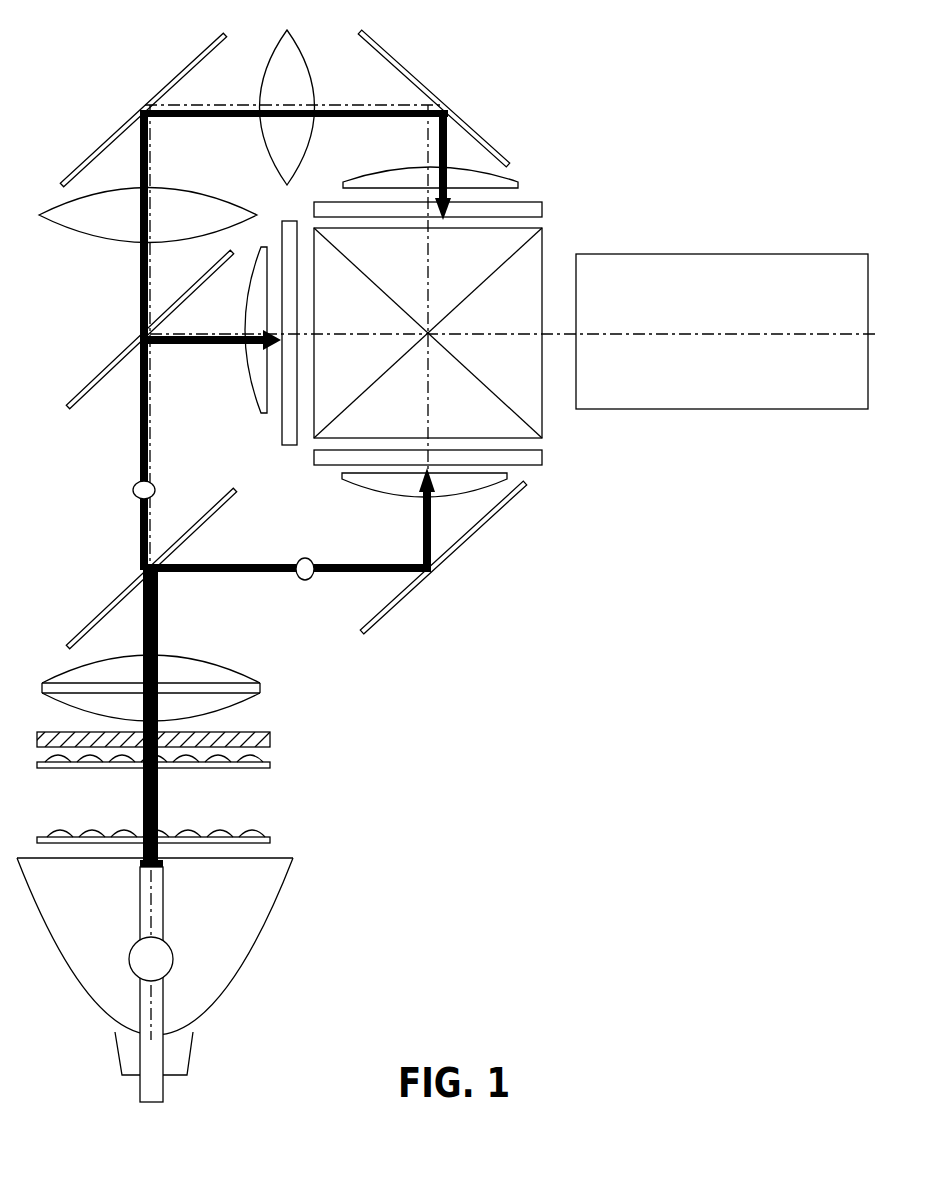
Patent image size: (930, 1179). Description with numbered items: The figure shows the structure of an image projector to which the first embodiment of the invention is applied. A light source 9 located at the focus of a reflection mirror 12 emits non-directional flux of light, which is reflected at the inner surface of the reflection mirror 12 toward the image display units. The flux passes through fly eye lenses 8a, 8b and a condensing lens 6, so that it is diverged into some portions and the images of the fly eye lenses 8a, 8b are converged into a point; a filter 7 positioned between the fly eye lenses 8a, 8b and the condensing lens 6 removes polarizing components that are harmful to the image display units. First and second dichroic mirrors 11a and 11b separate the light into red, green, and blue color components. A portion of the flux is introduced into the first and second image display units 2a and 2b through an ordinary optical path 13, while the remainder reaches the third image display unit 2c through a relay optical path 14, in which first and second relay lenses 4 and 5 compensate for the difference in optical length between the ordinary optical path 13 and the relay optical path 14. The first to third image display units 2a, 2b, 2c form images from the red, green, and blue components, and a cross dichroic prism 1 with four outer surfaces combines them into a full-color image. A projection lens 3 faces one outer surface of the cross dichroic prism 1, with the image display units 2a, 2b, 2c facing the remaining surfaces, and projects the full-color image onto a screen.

The cross dichroic prism 1 is at (533, 408).
The first image display unit 2a is at (543, 465).
The second image display unit 2b is at (287, 424).
The third image display unit 2c is at (543, 208).
The projection lens 3 is at (700, 254).
The first relay lens 4 is at (93, 227).
The second relay lens 5 is at (292, 44).
The condensing lens 6 is at (262, 687).
The filter 7 is at (271, 740).
The fly eye lens 8a is at (271, 841).
The fly eye lens 8b is at (83, 770).
The light source 9 is at (174, 960).
The first dichroic mirror 11a is at (107, 611).
The second dichroic mirror 11b is at (113, 362).
The reflection mirror 12 is at (85, 1010).
The ordinary optical path 13 is at (149, 461).
The relay optical path 14 is at (228, 107).